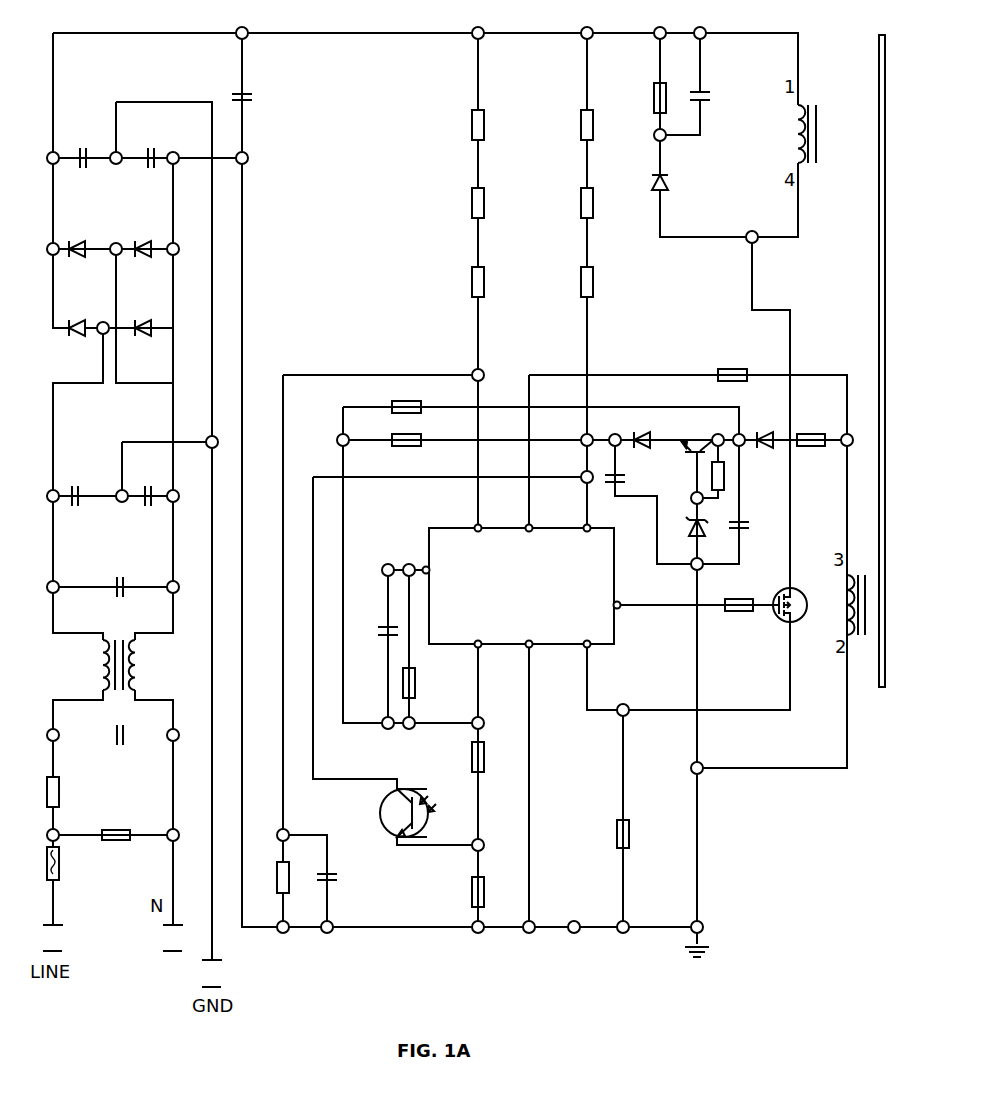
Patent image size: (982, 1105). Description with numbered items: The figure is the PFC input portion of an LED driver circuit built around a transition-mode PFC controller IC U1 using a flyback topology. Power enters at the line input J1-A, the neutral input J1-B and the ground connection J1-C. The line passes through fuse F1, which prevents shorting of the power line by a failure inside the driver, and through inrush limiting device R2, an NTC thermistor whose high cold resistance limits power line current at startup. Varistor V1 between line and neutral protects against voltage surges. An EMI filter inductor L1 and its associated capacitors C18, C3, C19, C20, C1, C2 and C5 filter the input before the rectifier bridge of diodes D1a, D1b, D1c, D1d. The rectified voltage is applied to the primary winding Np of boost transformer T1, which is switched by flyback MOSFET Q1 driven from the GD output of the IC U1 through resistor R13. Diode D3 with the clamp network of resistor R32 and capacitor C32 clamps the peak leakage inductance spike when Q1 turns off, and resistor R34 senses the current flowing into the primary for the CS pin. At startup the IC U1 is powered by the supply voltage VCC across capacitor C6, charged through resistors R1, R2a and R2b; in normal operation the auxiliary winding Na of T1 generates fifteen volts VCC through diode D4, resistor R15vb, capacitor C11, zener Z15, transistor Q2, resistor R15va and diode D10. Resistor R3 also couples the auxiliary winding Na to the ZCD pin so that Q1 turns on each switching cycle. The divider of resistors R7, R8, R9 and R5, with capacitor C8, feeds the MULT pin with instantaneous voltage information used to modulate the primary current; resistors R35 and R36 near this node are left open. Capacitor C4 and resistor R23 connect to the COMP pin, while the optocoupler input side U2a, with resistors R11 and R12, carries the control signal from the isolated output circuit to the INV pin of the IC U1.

The capacitor C1 is at (80, 149).
The capacitor C2 is at (148, 149).
The capacitor C5 is at (255, 97).
The rectifier bridge diode D1a is at (76, 317).
The rectifier bridge diode D1b is at (142, 317).
The rectifier bridge diode D1c is at (75, 238).
The rectifier bridge diode D1d is at (142, 238).
The capacitor C19 is at (73, 508).
The capacitor C20 is at (147, 508).
The capacitor C3 is at (120, 578).
The EMI filter inductor L1 is at (100, 665).
The capacitor C18 is at (123, 726).
The inrush limiting device R2 is at (69, 792).
The varistor V1 is at (116, 824).
The fuse F1 is at (67, 863).
The power line input J1-A is at (50, 938).
The neutral input J1-B is at (170, 938).
The ground connection J1-C is at (210, 973).
The resistor R7 is at (463, 125).
The resistor R8 is at (463, 203).
The resistor R9 is at (463, 282).
The resistor R1 is at (573, 125).
The resistor R2a is at (567, 203).
The resistor R2b is at (567, 282).
The clamp resistor R32 is at (641, 98).
The clamp capacitor C32 is at (719, 97).
The clamp diode D3 is at (679, 183).
The primary winding Np is at (792, 134).
The boost transformer T1 is at (881, 347).
The resistor R35 is at (403, 396).
The resistor R36 is at (403, 451).
The resistor R3 is at (732, 364).
The diode D10 is at (642, 430).
The transistor Q2 is at (696, 432).
The diode D4 is at (763, 430).
The resistor R15vb is at (823, 428).
The resistor R15va is at (756, 476).
The capacitor C6 is at (629, 481).
The zener diode Z15 is at (710, 537).
The capacitor C11 is at (758, 524).
The transition-mode PFC controller IC U1 is at (523, 586).
The capacitor C4 is at (376, 622).
The resistor R23 is at (429, 683).
The resistor R13 is at (741, 594).
The MOSFET Q1 is at (784, 616).
The auxiliary winding Na is at (840, 605).
The resistor R11 is at (462, 757).
The optocoupler input side U2a is at (389, 813).
The capacitor C8 is at (340, 864).
The resistor R5 is at (270, 888).
The resistor R12 is at (498, 892).
The current sense resistor R34 is at (606, 834).